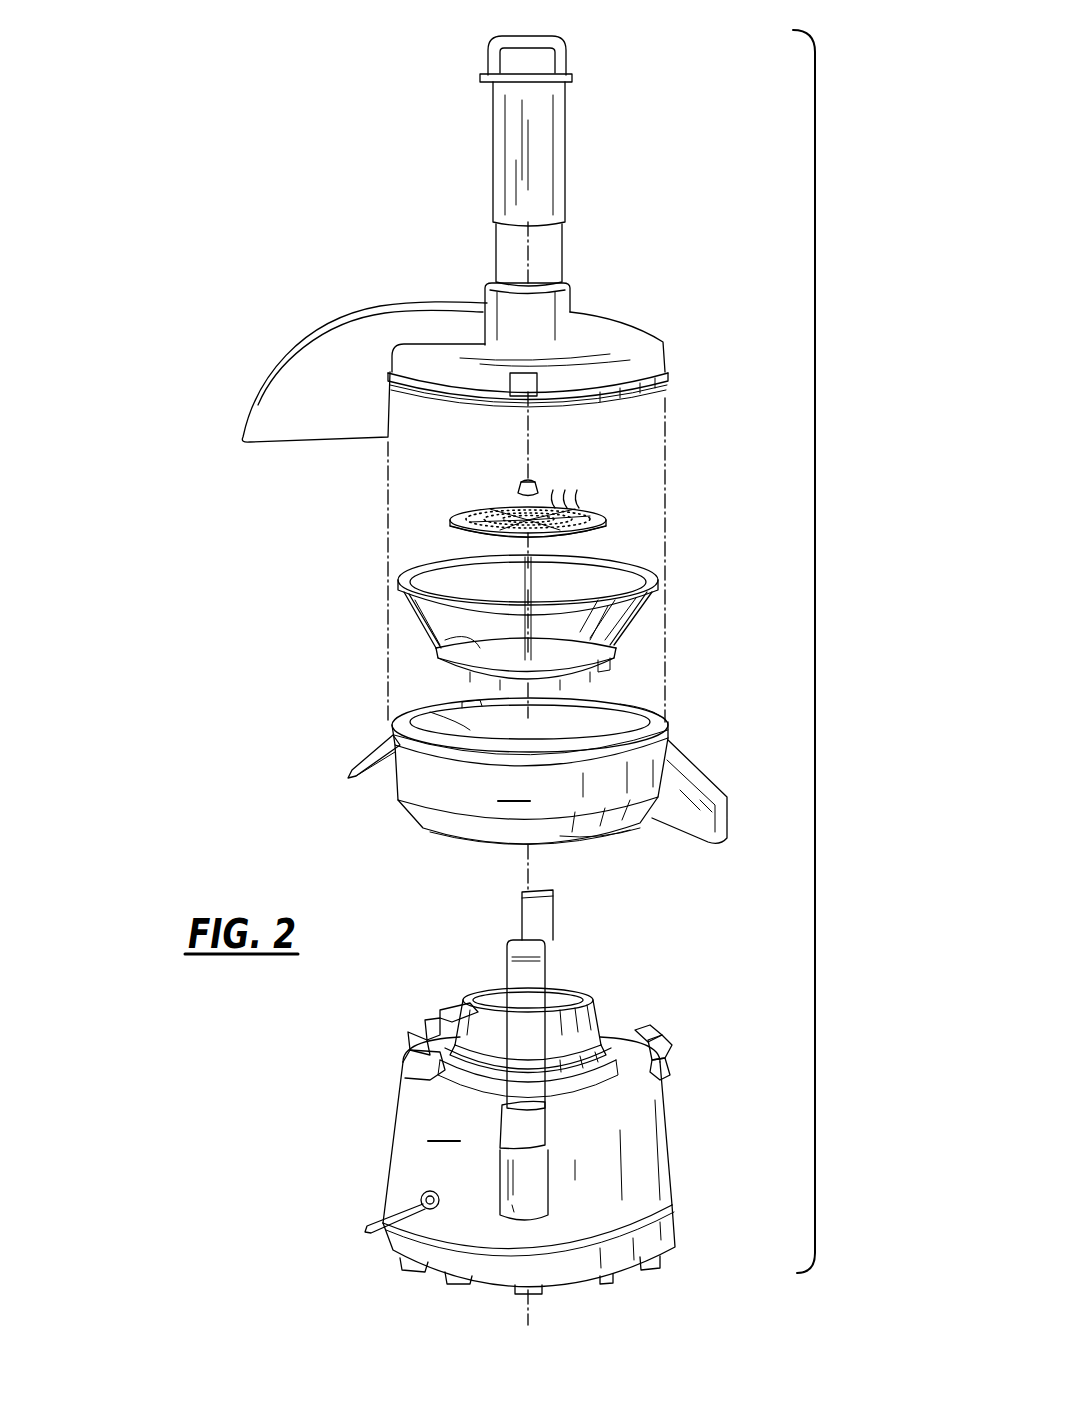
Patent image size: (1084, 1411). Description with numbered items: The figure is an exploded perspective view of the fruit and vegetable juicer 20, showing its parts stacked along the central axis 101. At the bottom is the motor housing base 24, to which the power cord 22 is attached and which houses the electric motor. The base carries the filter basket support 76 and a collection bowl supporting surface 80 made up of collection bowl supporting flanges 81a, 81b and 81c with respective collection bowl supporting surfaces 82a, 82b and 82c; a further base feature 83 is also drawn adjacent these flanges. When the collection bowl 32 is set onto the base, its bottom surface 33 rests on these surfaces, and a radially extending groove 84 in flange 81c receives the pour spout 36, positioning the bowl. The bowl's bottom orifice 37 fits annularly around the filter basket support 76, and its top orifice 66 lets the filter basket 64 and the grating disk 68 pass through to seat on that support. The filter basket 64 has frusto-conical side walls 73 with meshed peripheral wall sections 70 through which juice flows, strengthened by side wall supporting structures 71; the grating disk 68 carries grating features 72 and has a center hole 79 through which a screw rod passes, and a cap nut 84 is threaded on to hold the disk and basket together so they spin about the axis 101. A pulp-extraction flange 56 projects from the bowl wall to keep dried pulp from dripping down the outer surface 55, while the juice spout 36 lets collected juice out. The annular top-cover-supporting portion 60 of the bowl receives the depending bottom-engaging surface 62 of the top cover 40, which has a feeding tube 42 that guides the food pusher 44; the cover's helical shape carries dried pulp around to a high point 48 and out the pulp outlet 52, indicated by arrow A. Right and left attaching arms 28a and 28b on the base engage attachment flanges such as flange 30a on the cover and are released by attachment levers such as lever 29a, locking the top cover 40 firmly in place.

The fruit and vegetable juicer 20 is at (690, 60).
The power cord 22 is at (380, 1222).
The motor housing base 24 is at (529, 1165).
The right attaching arm 28a is at (512, 975).
The left attaching arm 28b is at (553, 916).
The attachment lever 29a is at (545, 1120).
The right attachment flange 30a is at (518, 394).
The collection bowl 32 is at (530, 771).
The bottom surface of the collection bowl 33 is at (490, 842).
The pour spout 36 is at (698, 790).
The bottom orifice 37 is at (590, 855).
The top cover 40 is at (664, 338).
The feeding tube 42 is at (572, 305).
The food pusher 44 is at (566, 142).
The high point in the top cover 48 is at (352, 327).
The pulp outlet 52 is at (300, 452).
The outer surface of the collection bowl 55 is at (388, 778).
The pulp-extraction flange 56 is at (355, 768).
The top-cover-supporting portion 60 is at (645, 712).
The bottom-engaging surface 62 is at (640, 390).
The filter basket 64 is at (655, 562).
The top orifice 66 is at (458, 735).
The grating disk 68 is at (600, 509).
The meshed peripheral wall sections 70 is at (592, 636).
The side wall supporting structures 71 is at (520, 648).
The grating teeth 72 is at (564, 482).
The side walls 73 is at (418, 628).
The filter basket support 76 is at (588, 1002).
The grating disk center hole 79 is at (508, 512).
The collection bowl supporting surface 80 is at (613, 1012).
The collection bowl supporting flange 81a is at (432, 1020).
The collection bowl supporting flange 81b is at (405, 1070).
The collection bowl supporting flange 81c is at (660, 1062).
The collection bowl supporting surface 82a is at (452, 1006).
The collection bowl supporting surface 82b is at (414, 1040).
The collection bowl supporting surface 82c is at (652, 1030).
The base top ring 83 is at (625, 1068).
The cap nut 84 is at (519, 486).
The central axis 101 is at (530, 243).
The rotation direction A is at (745, 1122).